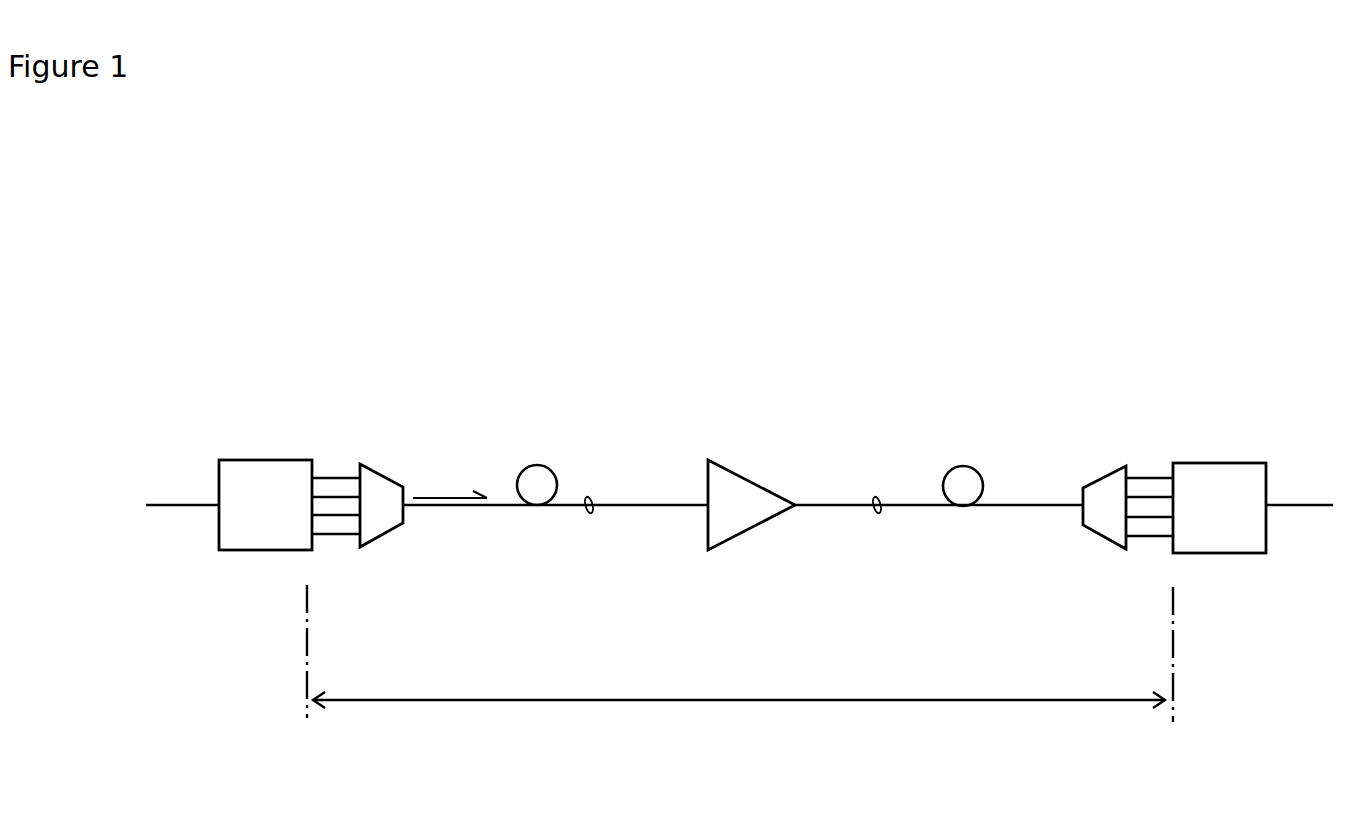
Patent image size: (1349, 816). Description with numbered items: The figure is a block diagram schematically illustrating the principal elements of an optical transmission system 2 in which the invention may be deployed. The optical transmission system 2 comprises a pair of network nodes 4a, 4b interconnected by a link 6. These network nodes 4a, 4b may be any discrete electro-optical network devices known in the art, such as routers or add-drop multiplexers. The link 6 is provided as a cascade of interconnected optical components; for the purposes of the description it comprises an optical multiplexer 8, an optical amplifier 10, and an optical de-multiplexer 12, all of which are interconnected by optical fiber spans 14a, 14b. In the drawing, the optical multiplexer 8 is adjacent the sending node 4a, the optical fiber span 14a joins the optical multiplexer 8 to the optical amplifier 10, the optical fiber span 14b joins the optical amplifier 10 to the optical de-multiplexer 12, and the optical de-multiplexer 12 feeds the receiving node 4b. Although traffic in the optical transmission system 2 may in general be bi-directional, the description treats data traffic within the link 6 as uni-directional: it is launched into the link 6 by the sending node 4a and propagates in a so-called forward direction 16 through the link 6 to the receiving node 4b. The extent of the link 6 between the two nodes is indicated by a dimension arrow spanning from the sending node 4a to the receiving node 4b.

The optical transmission system 2 is at (1233, 353).
The sending node 4a is at (247, 460).
The receiving node 4b is at (1243, 463).
The link 6 is at (740, 653).
The optical multiplexer 8 is at (375, 470).
The optical amplifier 10 is at (738, 472).
The optical de-multiplexer 12 is at (1108, 466).
The optical fiber span 14a is at (590, 497).
The optical fiber span 14b is at (879, 497).
The forward direction 16 is at (443, 497).